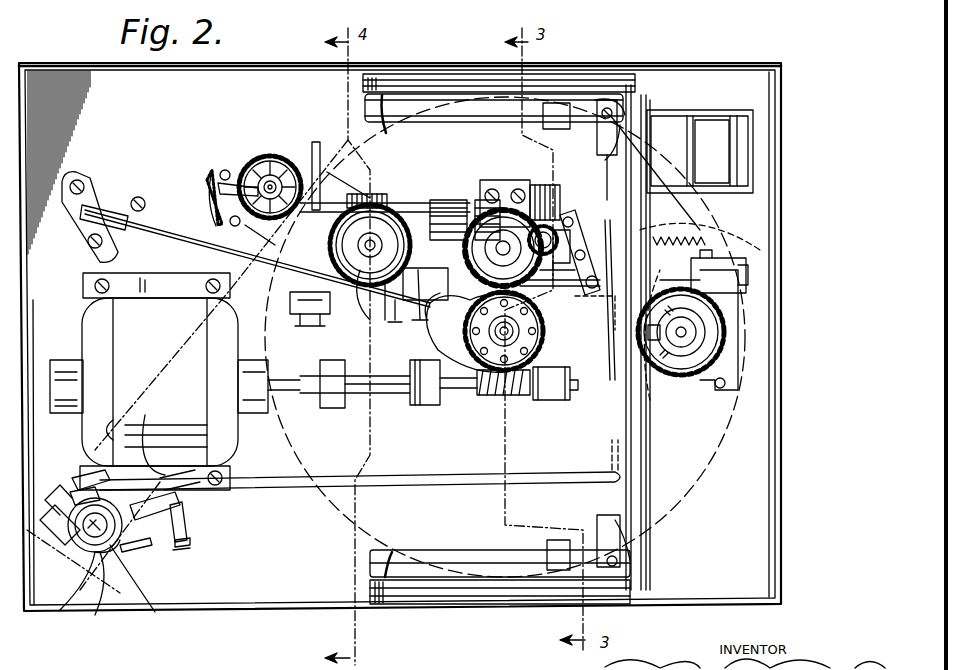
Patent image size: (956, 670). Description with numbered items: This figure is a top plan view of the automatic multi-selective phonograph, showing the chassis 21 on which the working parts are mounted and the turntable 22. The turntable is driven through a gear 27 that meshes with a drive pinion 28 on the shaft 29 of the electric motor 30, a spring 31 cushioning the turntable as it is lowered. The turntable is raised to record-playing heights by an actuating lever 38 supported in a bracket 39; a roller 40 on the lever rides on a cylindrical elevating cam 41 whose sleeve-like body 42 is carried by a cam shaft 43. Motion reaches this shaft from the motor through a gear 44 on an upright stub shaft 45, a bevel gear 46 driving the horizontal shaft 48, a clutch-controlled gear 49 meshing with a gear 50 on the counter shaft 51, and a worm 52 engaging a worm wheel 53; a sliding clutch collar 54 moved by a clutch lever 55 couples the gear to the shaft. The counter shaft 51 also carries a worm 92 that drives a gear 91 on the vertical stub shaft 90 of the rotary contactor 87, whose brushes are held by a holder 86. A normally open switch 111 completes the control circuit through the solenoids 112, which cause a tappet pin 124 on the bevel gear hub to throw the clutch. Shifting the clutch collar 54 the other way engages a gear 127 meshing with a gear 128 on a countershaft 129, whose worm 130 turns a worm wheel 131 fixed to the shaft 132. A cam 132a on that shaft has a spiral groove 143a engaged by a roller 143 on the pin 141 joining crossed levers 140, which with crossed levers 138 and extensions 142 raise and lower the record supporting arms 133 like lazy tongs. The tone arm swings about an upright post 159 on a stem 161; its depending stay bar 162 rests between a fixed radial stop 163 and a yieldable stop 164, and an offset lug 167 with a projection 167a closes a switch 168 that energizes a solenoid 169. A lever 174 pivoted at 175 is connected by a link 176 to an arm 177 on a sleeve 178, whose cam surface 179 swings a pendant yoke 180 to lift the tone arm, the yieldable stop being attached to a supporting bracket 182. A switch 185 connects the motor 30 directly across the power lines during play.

The chassis 21 is at (772, 70).
The turntable 22 is at (695, 490).
The gear 27 is at (548, 400).
The drive pinion 28 is at (495, 397).
The motor shaft 29 is at (440, 405).
The electric motor 30 is at (182, 322).
The spring 31 is at (468, 330).
The actuating lever 38 is at (200, 227).
The bracket 39 is at (105, 195).
The roller 40 is at (362, 310).
The cylindrical elevating cam 41 is at (385, 322).
The sleeve-like body 42 is at (375, 200).
The cam shaft 43 is at (398, 208).
The gear 44 is at (548, 258).
The upright stub shaft 45 is at (503, 240).
The bevel gear 46 is at (446, 284).
The horizontal shaft 48 is at (562, 265).
The clutch-controlled gear 49 is at (566, 210).
The gear 50 is at (545, 184).
The counter shaft 51 is at (480, 215).
The worm 52 is at (376, 194).
The worm wheel 53 is at (328, 255).
The sliding clutch collar 54 is at (580, 288).
The clutch lever 55 is at (596, 230).
The brush holder 86 is at (215, 175).
The rotary contactor 87 is at (255, 152).
The vertical stub shaft 90 is at (275, 172).
The gear 91 is at (270, 155).
The worm 92 is at (256, 236).
The normally open switch 111 is at (312, 105).
The solenoids 112 is at (452, 200).
The tappet pin 124 is at (511, 194).
The gear 127 is at (665, 235).
The gear 128 is at (612, 340).
The countershaft 129 is at (750, 282).
The worm 130 is at (685, 182).
The worm wheel 131 is at (680, 395).
The cam shaft 132 is at (690, 332).
The cam 132a is at (700, 345).
The upright supporting arms 133 is at (392, 552).
The crossed levers 138 is at (398, 110).
The crossed levers 140 is at (648, 465).
The pin 141 is at (612, 380).
The extensions 142 is at (655, 565).
The roller 143 is at (715, 385).
The spiral-shaped groove 143a is at (712, 378).
The upright post 159 is at (75, 600).
The stem 161 is at (85, 545).
The stay bar 162 is at (113, 430).
The fixed radial stop 163 is at (150, 550).
The yieldable stop 164 is at (75, 480).
The offset lug 167 is at (165, 425).
The projection 167a is at (166, 433).
The switch 168 is at (192, 536).
The solenoid 169 is at (662, 152).
The horizontally-swinging lever 174 is at (610, 440).
The pivot 175 is at (712, 151).
The link 176 is at (440, 478).
The arm 177 is at (72, 492).
The sleeve 178 is at (100, 612).
The cam surface 179 is at (150, 608).
The pendant yoke 180 is at (165, 530).
The supporting bracket 182 is at (186, 512).
The switch 185 is at (290, 298).